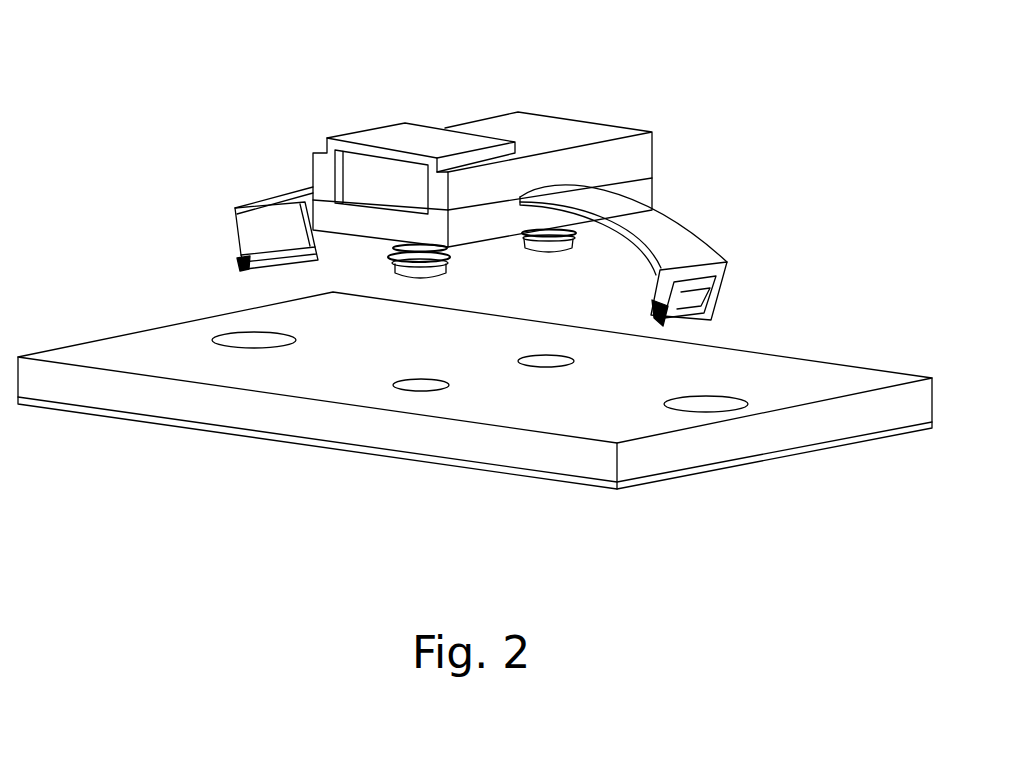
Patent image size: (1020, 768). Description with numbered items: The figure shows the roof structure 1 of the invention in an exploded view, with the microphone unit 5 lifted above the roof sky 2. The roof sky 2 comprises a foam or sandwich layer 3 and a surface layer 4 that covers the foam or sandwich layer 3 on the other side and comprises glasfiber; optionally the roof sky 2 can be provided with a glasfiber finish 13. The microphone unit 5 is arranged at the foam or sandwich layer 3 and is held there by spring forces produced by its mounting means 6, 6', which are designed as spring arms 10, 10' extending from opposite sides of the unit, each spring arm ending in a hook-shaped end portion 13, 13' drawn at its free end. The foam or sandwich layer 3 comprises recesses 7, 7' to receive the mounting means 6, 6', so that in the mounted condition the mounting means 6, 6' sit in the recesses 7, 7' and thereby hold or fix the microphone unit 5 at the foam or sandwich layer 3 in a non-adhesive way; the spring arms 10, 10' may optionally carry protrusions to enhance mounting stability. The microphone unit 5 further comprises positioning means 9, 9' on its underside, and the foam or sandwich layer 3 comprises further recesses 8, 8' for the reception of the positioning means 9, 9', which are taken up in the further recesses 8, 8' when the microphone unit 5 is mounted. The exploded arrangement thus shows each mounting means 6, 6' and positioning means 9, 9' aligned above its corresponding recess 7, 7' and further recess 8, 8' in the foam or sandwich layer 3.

The roof structure 1 is at (693, 91).
The roof sky 2 is at (166, 190).
The foam or sandwich layer 3 is at (860, 381).
The surface layer 4 is at (562, 484).
The microphone unit 5 is at (483, 225).
The mounting means 6 is at (641, 224).
The mounting means 6' is at (275, 149).
The recess 7 is at (712, 464).
The recess 7' is at (229, 306).
The further recess 8 is at (529, 448).
The further recess 8' is at (409, 451).
The positioning means 9 is at (573, 270).
The positioning means 9' is at (364, 271).
The spring arm 10 is at (623, 210).
The spring arm 10' is at (250, 166).
The glasfiber finish 13 is at (730, 294).
The left latching hook 13' is at (207, 236).